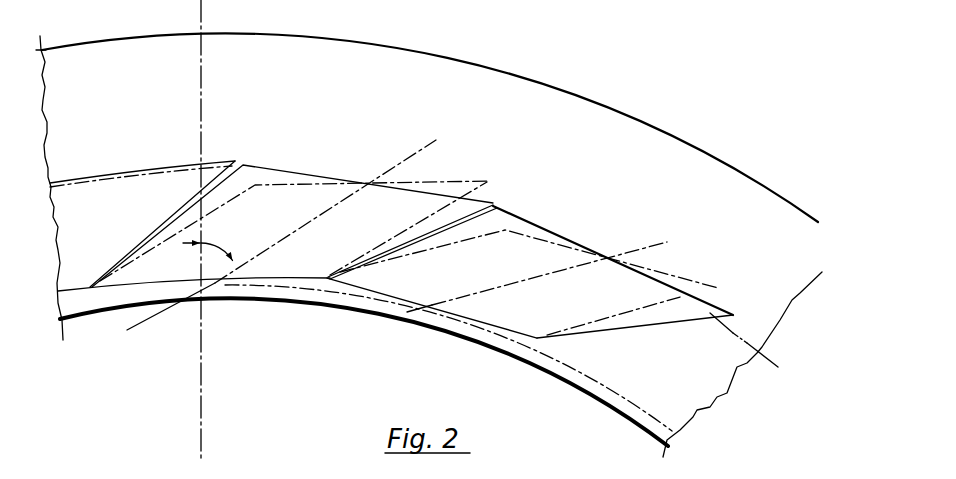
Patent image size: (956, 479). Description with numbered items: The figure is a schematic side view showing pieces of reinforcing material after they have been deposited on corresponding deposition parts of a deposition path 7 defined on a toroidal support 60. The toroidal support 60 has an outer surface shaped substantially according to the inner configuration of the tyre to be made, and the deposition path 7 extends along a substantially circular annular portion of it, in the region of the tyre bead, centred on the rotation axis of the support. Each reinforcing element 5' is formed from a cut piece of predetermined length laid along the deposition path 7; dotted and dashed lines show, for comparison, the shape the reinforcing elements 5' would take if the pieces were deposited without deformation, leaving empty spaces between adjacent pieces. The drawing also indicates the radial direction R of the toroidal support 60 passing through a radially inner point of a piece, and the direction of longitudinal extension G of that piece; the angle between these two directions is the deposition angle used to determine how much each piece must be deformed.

The toroidal support 60 is at (510, 90).
The deposition path 7 is at (685, 383).
The reinforcing element 5' is at (414, 234).
The radial direction R is at (202, 72).
The direction of longitudinal extension G is at (435, 142).